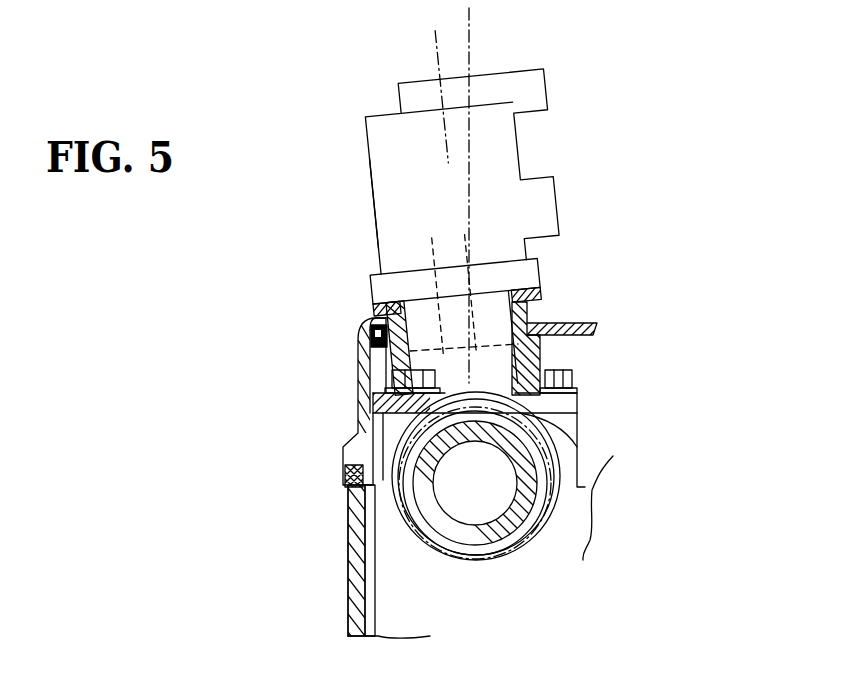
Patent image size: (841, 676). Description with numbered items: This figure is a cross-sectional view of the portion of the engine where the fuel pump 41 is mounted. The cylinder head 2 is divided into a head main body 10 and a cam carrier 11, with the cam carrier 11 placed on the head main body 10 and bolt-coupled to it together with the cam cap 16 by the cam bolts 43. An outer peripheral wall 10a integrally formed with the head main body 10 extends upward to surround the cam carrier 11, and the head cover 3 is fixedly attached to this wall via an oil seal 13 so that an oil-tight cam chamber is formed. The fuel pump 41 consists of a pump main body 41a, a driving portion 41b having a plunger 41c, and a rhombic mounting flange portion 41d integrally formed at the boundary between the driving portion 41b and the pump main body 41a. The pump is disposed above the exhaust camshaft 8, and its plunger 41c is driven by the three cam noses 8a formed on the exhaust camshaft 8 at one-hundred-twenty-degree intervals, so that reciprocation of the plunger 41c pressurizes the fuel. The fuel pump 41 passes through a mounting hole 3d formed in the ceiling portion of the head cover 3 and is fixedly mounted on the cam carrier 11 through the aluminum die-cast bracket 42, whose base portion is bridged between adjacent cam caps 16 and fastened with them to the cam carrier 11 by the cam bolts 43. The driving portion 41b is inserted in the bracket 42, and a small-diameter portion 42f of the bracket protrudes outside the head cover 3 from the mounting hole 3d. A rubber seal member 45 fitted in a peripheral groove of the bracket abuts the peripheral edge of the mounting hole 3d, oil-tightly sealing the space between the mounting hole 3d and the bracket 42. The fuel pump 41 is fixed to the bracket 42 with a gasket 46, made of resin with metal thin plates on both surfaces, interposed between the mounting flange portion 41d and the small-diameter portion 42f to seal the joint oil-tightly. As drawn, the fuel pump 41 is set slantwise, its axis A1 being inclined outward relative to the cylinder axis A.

The fuel pump 41 is at (372, 150).
The pump main body 41a is at (370, 205).
The mounting flange portion 41d is at (372, 287).
The rubber seal member 45 is at (372, 338).
The mounting hole 3d is at (386, 363).
The driving portion 41b is at (398, 384).
The head cover 3 is at (353, 428).
The oil seal 13 is at (347, 474).
The cylinder head 2 is at (258, 532).
The head main body 10 is at (348, 536).
The cam carrier 11 is at (348, 578).
The outer peripheral wall 10a is at (348, 606).
The exhaust camshaft 8 is at (481, 564).
The gasket 46 is at (544, 293).
The small-diameter portion 42f is at (548, 316).
The bracket 42 is at (546, 348).
The plunger 41c is at (540, 357).
The cam bolts 43 is at (572, 380).
The cam cap 16 is at (577, 432).
The cam noses 8a is at (578, 458).
The cylinder axis A is at (472, 28).
The axis of the fuel pump A1 is at (436, 52).